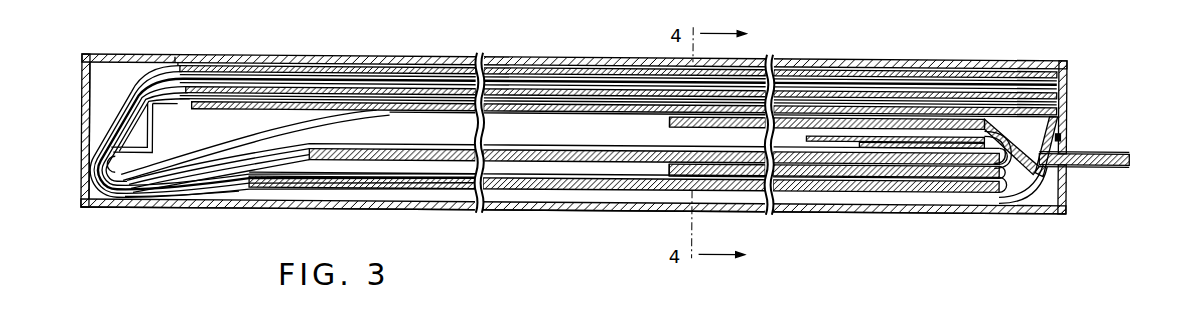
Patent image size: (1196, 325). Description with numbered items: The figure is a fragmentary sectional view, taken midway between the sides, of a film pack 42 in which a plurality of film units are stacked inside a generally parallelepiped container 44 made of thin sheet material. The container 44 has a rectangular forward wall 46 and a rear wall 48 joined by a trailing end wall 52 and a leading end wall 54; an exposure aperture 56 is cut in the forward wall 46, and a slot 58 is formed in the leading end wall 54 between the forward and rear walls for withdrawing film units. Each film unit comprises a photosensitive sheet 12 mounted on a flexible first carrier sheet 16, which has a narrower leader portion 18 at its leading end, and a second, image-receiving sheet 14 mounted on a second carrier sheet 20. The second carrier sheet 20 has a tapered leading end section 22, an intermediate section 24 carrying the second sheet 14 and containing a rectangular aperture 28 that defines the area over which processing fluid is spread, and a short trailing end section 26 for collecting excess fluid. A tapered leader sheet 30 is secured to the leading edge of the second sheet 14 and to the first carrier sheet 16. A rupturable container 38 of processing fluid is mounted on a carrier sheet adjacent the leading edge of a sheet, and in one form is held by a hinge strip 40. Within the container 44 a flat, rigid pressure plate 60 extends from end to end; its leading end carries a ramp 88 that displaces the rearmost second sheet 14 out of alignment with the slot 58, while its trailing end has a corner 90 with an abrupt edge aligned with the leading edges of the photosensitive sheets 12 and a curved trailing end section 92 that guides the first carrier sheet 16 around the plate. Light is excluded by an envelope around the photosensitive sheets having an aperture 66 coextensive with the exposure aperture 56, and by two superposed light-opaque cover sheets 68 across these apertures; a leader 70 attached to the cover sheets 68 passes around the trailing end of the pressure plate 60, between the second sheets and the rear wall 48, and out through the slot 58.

The photosensitive sheet 12 is at (500, 70).
The second sheet 14 is at (508, 180).
The first carrier sheet 16 is at (120, 113).
The leader portion 18 is at (1132, 150).
The second carrier sheet 20 is at (673, 176).
The tapered leading end section 22 is at (755, 116).
The intermediate section 24 is at (612, 150).
The trailing end section 26 is at (152, 206).
The aperture 28 is at (292, 146).
The leader sheet 30 is at (825, 120).
The rupturable container 38 is at (875, 130).
The hinge strip 40 is at (945, 128).
The film pack 42 is at (442, 206).
The container 44 is at (116, 55).
The forward wall 46 is at (150, 56).
The rear wall 48 is at (872, 208).
The trailing end wall 52 is at (82, 152).
The leading end wall 54 is at (1062, 110).
The exposure aperture 56 is at (178, 60).
The slot 58 is at (1062, 133).
The pressure plate 60 is at (495, 112).
The aperture 66 is at (215, 68).
The cover sheets 68 is at (560, 70).
The leader 70 is at (1092, 158).
The ramp 88 is at (1060, 180).
The corner 90 is at (160, 106).
The trailing end section 92 is at (108, 170).